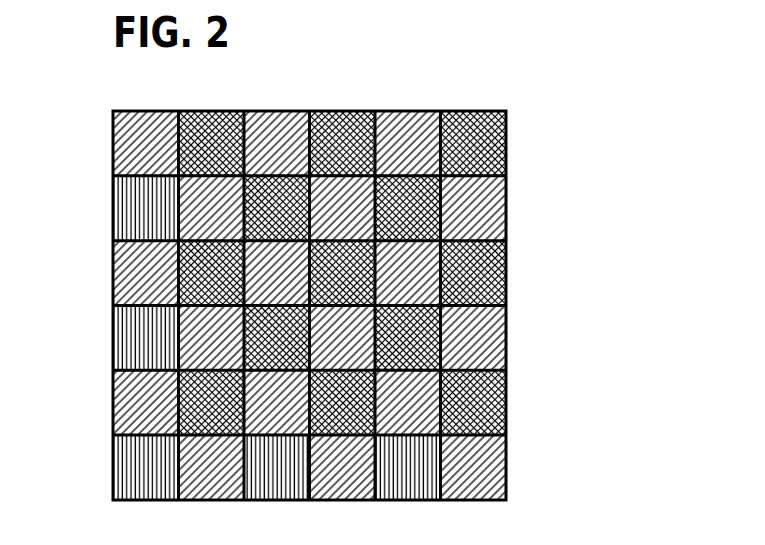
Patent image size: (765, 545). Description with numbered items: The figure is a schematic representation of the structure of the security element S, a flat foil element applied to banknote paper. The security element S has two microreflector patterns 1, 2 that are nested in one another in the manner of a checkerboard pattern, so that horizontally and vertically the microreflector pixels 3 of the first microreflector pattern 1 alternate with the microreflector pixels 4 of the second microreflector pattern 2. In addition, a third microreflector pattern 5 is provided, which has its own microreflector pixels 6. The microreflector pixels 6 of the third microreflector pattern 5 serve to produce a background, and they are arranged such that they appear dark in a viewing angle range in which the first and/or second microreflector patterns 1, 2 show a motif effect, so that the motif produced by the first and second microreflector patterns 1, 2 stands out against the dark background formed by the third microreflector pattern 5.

The security element S is at (608, 151).
The first microreflector pattern 1 is at (506, 208).
The second microreflector pattern 2 is at (506, 273).
The microreflector pixels of the first microreflector pattern 3 is at (393, 128).
The microreflector pixels of the second microreflector pattern 4 is at (493, 147).
The third microreflector pattern 5 is at (112, 337).
The microreflector pixels of the third microreflector pattern 6 is at (112, 208).